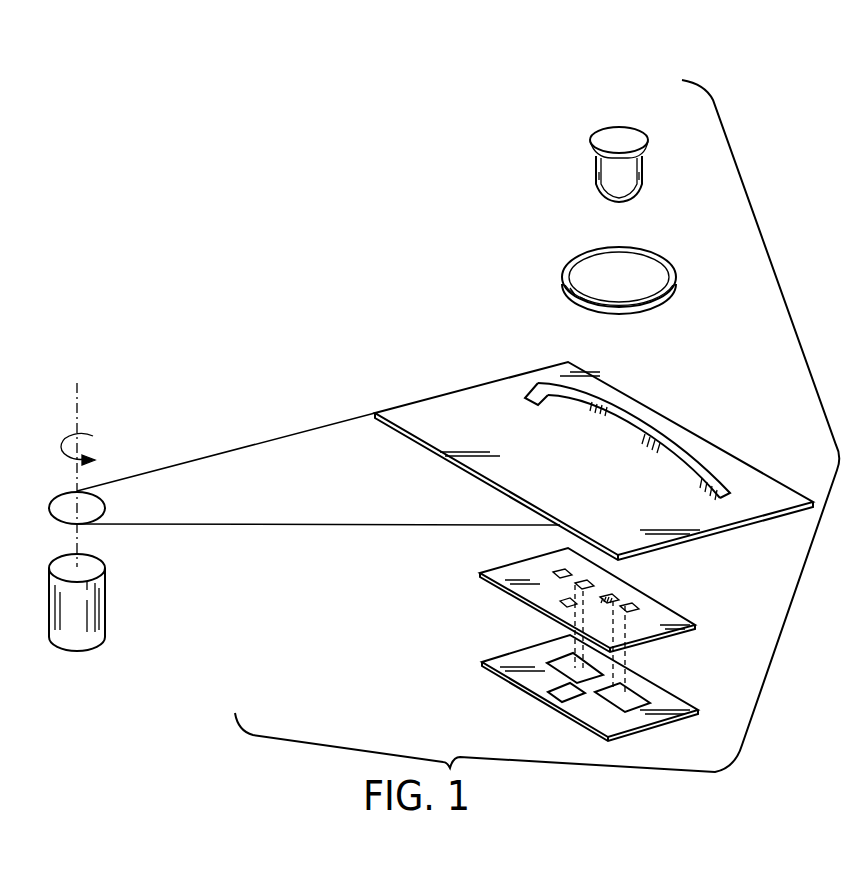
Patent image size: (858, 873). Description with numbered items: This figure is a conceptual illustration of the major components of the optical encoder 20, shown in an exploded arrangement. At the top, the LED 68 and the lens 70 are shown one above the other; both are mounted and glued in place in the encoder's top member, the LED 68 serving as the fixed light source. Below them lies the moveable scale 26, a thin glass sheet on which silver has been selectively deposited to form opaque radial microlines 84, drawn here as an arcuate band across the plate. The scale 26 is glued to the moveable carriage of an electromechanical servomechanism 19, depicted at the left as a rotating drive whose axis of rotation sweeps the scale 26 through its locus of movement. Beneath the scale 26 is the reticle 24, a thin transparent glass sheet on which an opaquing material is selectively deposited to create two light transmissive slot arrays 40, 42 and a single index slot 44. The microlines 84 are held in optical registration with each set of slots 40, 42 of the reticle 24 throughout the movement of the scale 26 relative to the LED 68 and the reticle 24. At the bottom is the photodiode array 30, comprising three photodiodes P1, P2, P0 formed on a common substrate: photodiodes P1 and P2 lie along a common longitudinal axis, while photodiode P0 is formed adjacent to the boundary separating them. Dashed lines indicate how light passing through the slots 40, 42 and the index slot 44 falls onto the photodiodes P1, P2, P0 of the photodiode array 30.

The optical encoder 20 is at (421, 255).
The LED 68 is at (642, 163).
The lens 70 is at (667, 263).
The moveable scale 26 is at (705, 438).
The radial microlines 84 is at (713, 482).
The reticle 24 is at (687, 619).
The light transmissive slot array 42 is at (555, 573).
The index slot 44 is at (562, 602).
The light transmissive slot array 40 is at (627, 609).
The photodiode array 30 is at (687, 707).
The photodiode P2 is at (568, 662).
The photodiode P0 is at (551, 697).
The photodiode P1 is at (633, 702).
The electromechanical servomechanism 19 is at (98, 597).